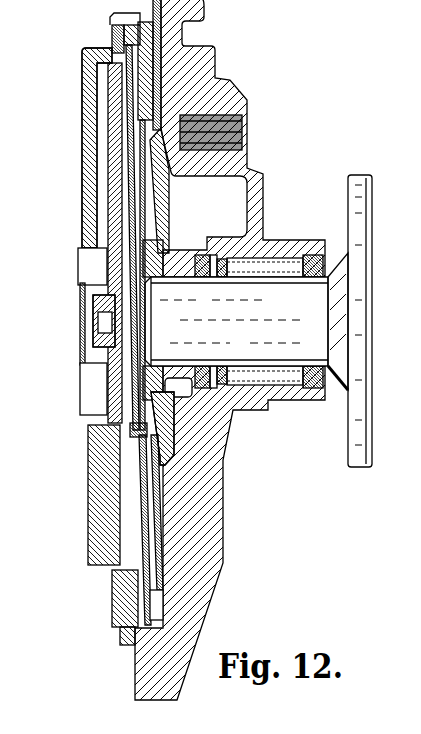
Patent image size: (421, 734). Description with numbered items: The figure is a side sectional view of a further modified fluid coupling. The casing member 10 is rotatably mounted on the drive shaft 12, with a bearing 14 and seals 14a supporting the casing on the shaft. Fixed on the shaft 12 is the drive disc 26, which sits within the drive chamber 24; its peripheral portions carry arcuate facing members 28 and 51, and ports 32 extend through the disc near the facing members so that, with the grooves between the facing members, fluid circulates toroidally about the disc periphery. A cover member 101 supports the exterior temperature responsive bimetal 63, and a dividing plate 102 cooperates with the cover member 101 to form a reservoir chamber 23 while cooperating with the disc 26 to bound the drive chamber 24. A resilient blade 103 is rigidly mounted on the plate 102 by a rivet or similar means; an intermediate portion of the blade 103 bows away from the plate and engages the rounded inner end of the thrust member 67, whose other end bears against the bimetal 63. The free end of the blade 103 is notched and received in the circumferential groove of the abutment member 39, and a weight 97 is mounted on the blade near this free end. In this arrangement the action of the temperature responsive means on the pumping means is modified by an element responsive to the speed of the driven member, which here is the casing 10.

The casing member 10 is at (257, 183).
The drive shaft 12 is at (247, 315).
The bearing 14 is at (240, 269).
The seals 14a is at (213, 256).
The reservoir chamber 23 is at (135, 520).
The drive chamber 24 is at (140, 490).
The drive disc 26 is at (176, 482).
The arcuate facing members 28 is at (130, 571).
The ports 32 is at (200, 513).
The abutment member 39 is at (111, 32).
The arcuate facing members 51 is at (165, 579).
The bimetal strip 63 is at (80, 352).
The thrust member 67 is at (113, 333).
The weight 97 is at (82, 105).
The cover member 101 is at (82, 140).
The dividing plate 102 is at (148, 206).
The resilient blade 103 is at (133, 182).